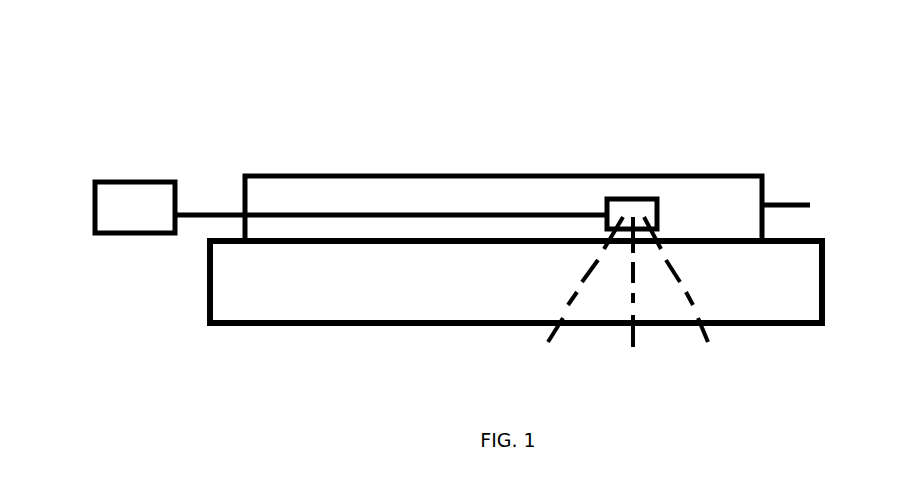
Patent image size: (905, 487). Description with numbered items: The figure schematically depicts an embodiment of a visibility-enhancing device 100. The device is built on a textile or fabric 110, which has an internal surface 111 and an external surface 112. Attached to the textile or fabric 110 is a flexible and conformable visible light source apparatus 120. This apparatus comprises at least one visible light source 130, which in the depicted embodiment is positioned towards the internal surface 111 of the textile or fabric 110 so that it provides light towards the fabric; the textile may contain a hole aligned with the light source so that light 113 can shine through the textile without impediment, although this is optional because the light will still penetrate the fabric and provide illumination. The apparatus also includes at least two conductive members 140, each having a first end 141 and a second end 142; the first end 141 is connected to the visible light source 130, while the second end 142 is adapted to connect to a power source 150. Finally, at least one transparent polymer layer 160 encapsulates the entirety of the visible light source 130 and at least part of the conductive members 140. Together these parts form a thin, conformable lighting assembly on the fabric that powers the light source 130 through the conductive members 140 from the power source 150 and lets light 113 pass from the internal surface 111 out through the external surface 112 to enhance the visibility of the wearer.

The visibility-enhancing device 100 is at (812, 48).
The textile or fabric 110 is at (516, 282).
The internal surface 111 is at (792, 241).
The external surface 112 is at (775, 323).
The light 113 is at (628, 297).
The visible light source apparatus 120 is at (813, 205).
The visible light source 130 is at (638, 215).
The conductive members 140 is at (475, 215).
The first end 141 is at (598, 205).
The second end 142 is at (180, 207).
The power source 150 is at (135, 207).
The transparent polymer layer 160 is at (708, 208).